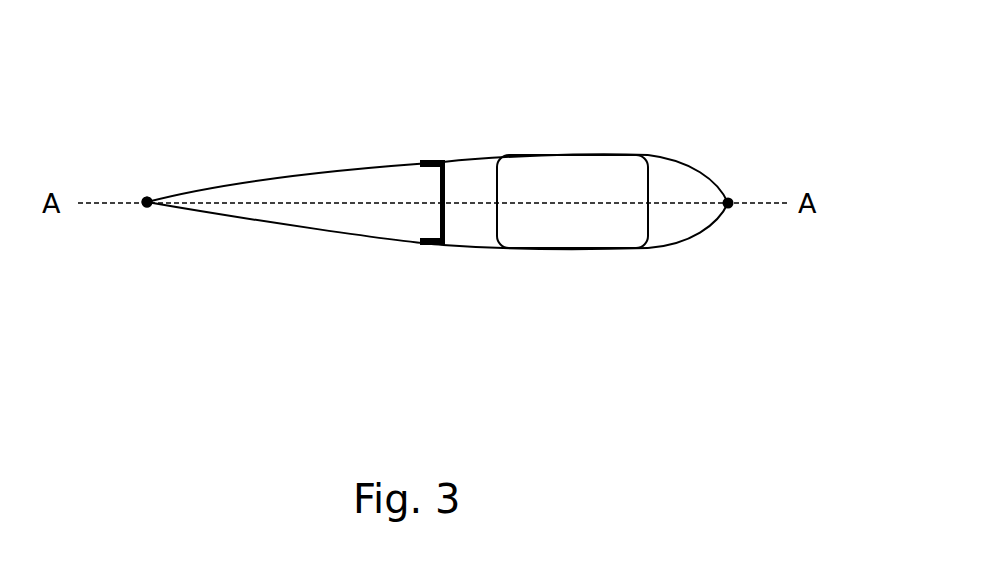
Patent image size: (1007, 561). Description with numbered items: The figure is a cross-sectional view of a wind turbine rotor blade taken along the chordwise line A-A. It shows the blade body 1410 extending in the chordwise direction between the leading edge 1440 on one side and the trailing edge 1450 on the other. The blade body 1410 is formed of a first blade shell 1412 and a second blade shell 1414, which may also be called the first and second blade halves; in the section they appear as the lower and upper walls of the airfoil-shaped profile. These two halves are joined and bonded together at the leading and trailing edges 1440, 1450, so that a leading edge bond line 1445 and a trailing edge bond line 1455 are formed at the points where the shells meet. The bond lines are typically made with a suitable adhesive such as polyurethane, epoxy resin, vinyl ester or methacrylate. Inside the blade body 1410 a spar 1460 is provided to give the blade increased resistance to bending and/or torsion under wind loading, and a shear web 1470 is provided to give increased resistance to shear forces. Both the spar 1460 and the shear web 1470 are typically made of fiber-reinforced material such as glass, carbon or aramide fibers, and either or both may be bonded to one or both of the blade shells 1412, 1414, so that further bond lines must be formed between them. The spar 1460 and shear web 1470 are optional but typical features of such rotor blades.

The blade body 1410 is at (358, 237).
The first blade shell 1412 is at (473, 248).
The second blade shell 1414 is at (350, 168).
The leading edge 1440 is at (737, 233).
The leading edge bond line 1445 is at (731, 198).
The trailing edge 1450 is at (133, 172).
The trailing edge bond line 1455 is at (153, 209).
The spar 1460 is at (607, 155).
The shear web 1470 is at (435, 159).